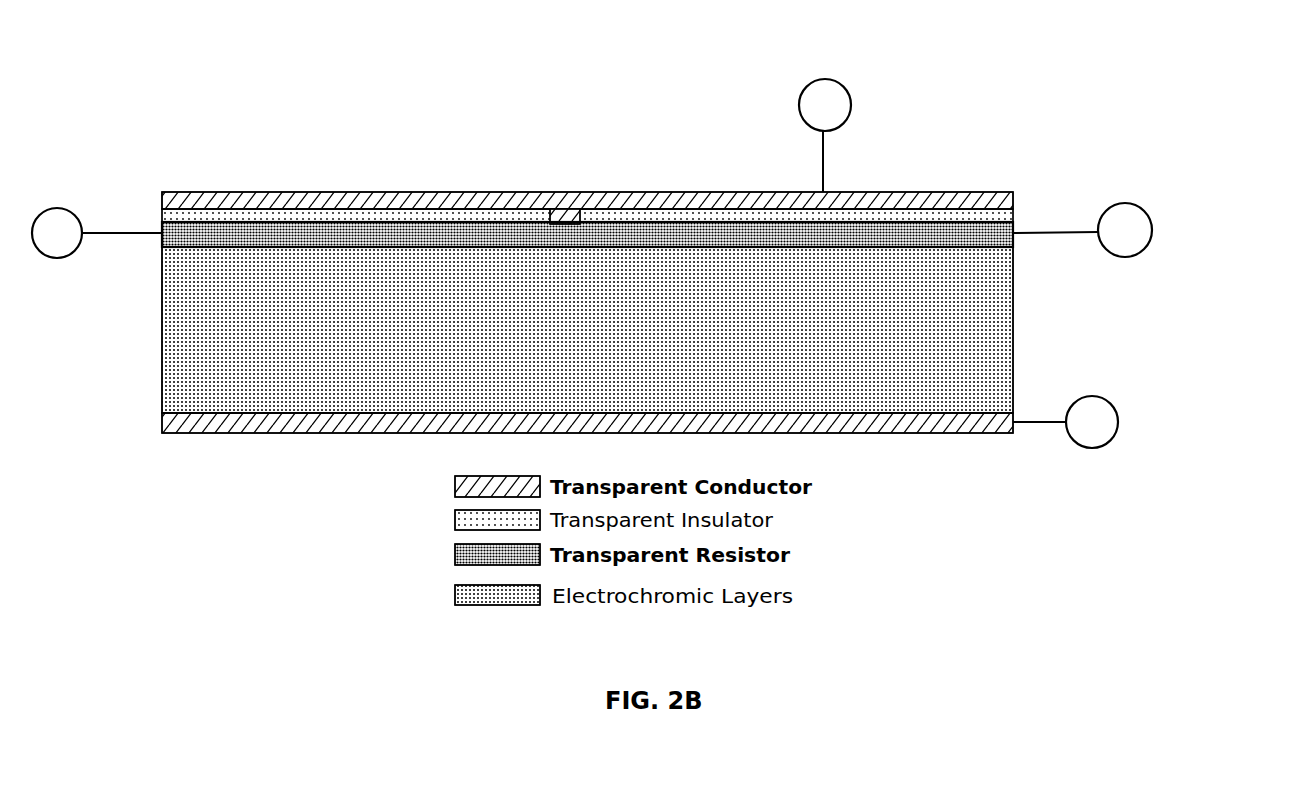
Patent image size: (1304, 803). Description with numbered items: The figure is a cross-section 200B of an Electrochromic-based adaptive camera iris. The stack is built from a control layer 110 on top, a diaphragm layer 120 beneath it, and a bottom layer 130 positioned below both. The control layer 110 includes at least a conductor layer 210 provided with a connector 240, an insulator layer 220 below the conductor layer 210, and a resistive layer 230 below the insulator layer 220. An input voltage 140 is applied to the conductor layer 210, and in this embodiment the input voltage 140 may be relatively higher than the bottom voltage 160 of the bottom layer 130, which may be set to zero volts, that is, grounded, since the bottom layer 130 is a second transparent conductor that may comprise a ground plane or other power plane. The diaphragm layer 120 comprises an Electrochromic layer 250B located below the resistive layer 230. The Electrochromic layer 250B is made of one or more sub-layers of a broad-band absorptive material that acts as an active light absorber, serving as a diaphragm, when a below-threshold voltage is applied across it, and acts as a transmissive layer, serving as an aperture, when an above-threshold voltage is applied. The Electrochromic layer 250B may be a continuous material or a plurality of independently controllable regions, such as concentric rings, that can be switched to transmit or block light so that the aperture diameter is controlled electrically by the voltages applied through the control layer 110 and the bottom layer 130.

The cross-section 200B is at (80, 54).
The control layer 110 is at (152, 187).
The diaphragm layer 120 is at (163, 422).
The bottom layer 130 is at (851, 104).
The input voltage 140 is at (1152, 230).
The bottom voltage 160 is at (1120, 424).
The conductor layer 210 is at (980, 192).
The insulator layer 220 is at (633, 220).
The resistive layer 230 is at (203, 233).
The connector 240 is at (567, 220).
The Electrochromic layer 250B is at (1013, 335).